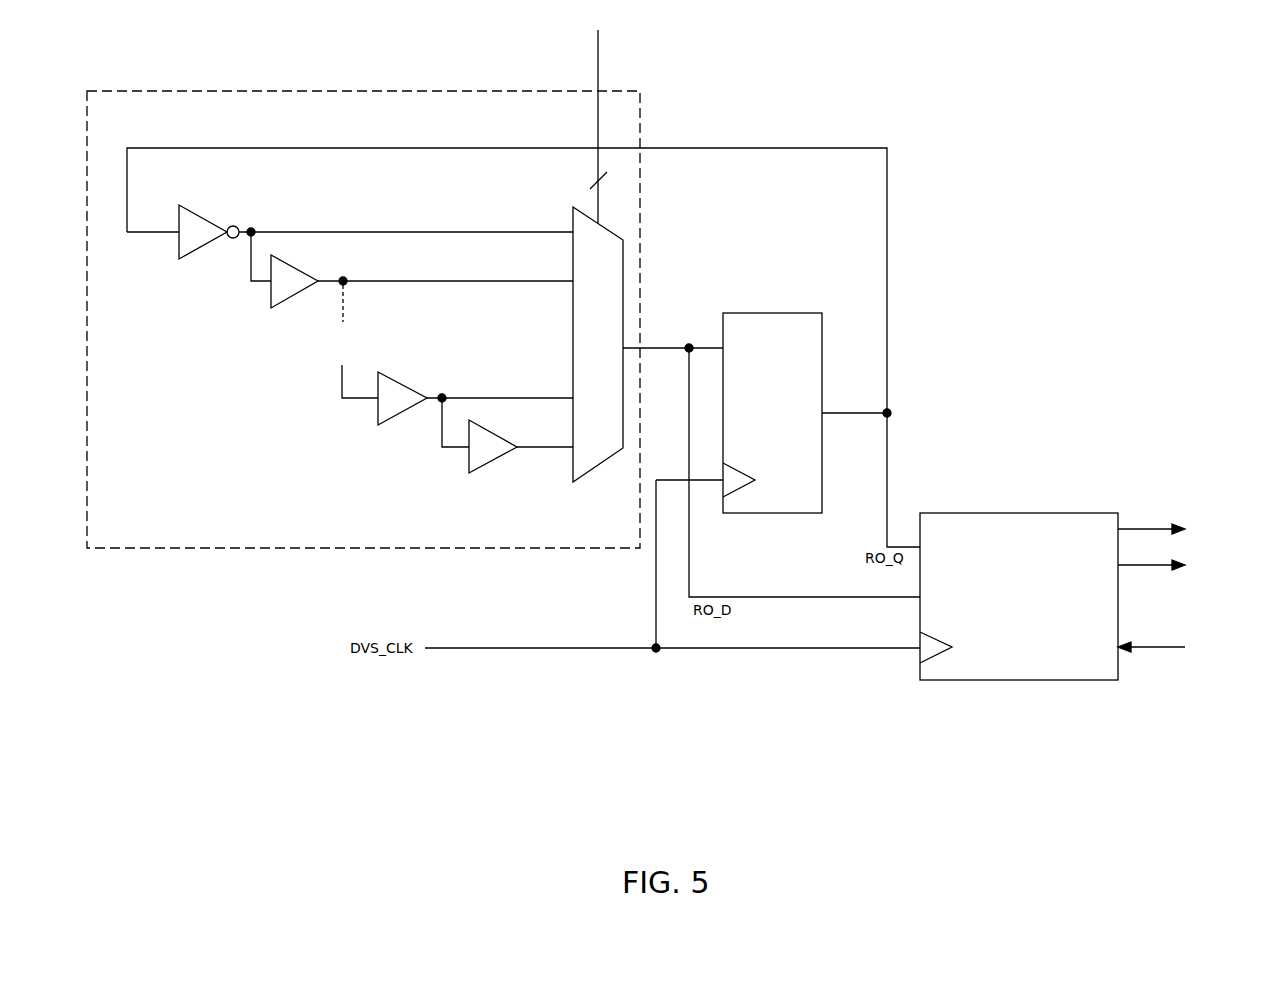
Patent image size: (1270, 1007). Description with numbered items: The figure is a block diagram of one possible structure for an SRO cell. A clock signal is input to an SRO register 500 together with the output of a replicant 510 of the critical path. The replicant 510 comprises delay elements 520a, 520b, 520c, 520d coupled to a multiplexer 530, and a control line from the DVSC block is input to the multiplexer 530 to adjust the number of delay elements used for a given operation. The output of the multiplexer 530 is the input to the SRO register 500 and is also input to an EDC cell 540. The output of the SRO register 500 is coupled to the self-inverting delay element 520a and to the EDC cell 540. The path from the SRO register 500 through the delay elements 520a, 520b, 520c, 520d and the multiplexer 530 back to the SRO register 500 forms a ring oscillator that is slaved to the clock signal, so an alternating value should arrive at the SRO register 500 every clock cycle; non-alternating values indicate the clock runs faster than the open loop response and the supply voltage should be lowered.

The SRO register 500 is at (772, 413).
The replicant 510 is at (363, 309).
The self-inverting delay element 520a is at (350, 244).
The delay element 520b is at (412, 282).
The delay element 520c is at (457, 407).
The delay element 520d is at (507, 449).
The multiplexer 530 is at (598, 256).
The EDC cell 540 is at (1095, 592).